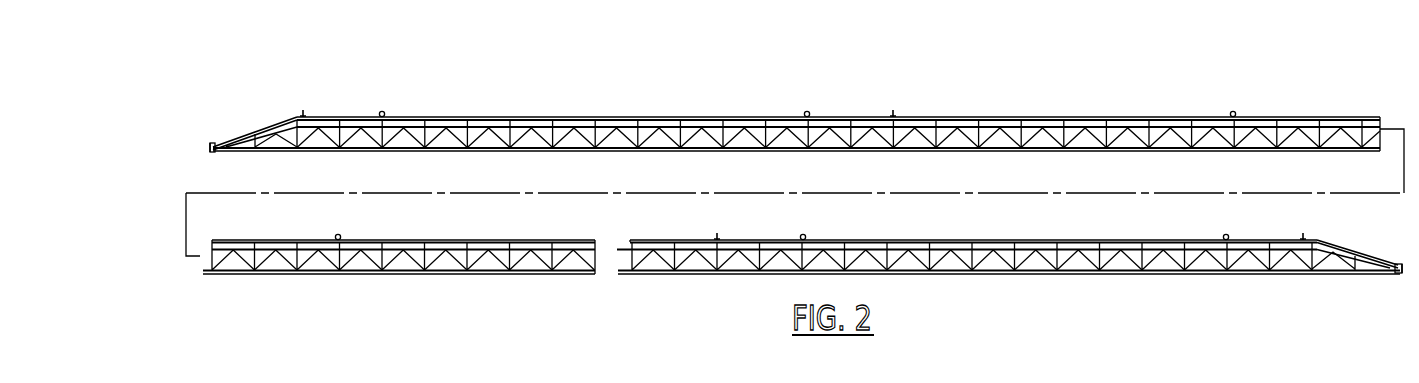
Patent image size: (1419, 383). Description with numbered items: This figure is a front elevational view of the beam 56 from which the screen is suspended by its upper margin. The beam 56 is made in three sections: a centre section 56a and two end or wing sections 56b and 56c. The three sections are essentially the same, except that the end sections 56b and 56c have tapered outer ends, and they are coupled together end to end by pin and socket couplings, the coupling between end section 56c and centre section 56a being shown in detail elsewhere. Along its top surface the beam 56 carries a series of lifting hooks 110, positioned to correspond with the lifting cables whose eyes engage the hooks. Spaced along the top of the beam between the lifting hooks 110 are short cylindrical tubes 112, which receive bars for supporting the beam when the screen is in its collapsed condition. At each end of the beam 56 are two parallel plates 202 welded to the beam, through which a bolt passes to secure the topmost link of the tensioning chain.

The beam 56 is at (500, 280).
The centre section 56a is at (1205, 117).
The end section 56b is at (548, 118).
The end section 56c is at (1086, 272).
The lifting hooks 110 is at (303, 114).
The short cylindrical tubes 112 is at (384, 113).
The parallel plates 202 is at (215, 152).